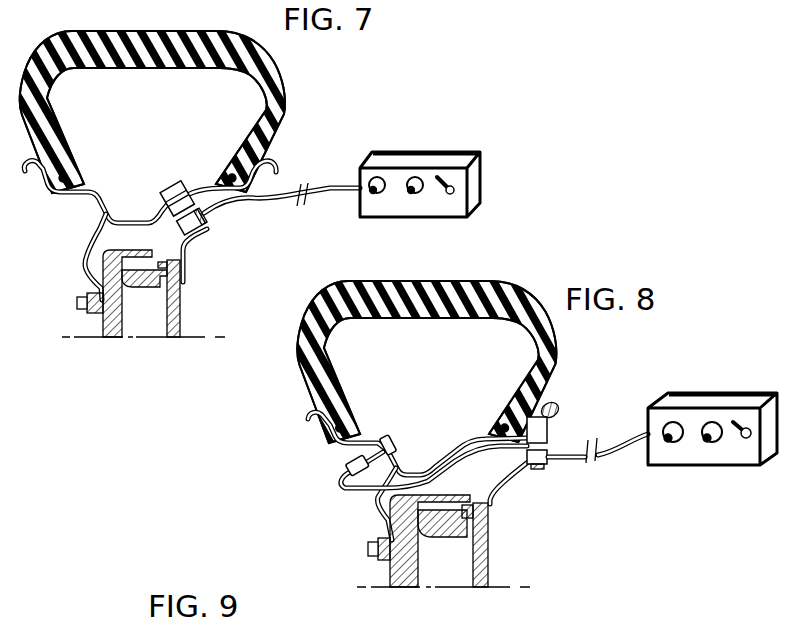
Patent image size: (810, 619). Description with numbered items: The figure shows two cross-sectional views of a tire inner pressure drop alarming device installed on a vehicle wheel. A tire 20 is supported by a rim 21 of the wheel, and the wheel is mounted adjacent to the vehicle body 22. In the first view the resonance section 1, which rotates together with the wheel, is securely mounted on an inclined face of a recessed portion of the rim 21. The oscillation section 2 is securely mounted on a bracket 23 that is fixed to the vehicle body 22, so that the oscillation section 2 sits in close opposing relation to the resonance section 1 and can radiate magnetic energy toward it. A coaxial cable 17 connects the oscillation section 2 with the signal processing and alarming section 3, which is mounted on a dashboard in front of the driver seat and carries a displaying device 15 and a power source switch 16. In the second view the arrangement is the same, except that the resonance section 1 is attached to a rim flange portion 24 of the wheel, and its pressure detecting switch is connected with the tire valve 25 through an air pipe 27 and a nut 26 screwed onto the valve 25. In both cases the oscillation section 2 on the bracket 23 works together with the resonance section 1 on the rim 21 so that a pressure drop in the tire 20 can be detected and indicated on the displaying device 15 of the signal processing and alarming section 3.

In FIG. 7, the resonance section 1 is at (172, 186).
In FIG. 8, the resonance section 1 is at (548, 432).
In FIG. 7, the oscillation section 2 is at (215, 226).
In FIG. 8, the oscillation section 2 is at (527, 459).
In FIG. 7, the signal processing and alarming section 3 is at (413, 217).
In FIG. 8, the signal processing and alarming section 3 is at (718, 466).
In FIG. 7, the displaying device 15 is at (413, 177).
In FIG. 8, the displaying device 15 is at (704, 447).
In FIG. 7, the power source switch 16 is at (452, 172).
In FIG. 8, the power source switch 16 is at (741, 424).
In FIG. 7, the coaxial cable 17 is at (287, 207).
In FIG. 8, the coaxial cable 17 is at (612, 454).
In FIG. 7, the tire 20 is at (169, 62).
In FIG. 8, the tire 20 is at (421, 316).
In FIG. 7, the rim 21 is at (67, 203).
In FIG. 8, the rim 21 is at (455, 452).
In FIG. 7, the vehicle body 22 is at (182, 323).
In FIG. 8, the vehicle body 22 is at (488, 573).
In FIG. 7, the bracket 23 is at (187, 255).
In FIG. 8, the bracket 23 is at (513, 481).
In FIG. 8, the rim flange portion 24 is at (553, 404).
In FIG. 8, the valve 25 is at (381, 441).
In FIG. 8, the nut 26 is at (342, 461).
In FIG. 8, the air pipe 27 is at (357, 489).